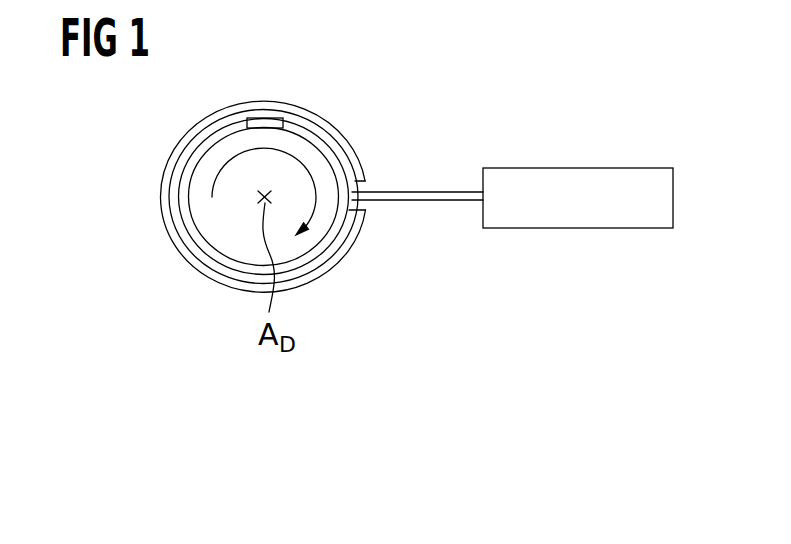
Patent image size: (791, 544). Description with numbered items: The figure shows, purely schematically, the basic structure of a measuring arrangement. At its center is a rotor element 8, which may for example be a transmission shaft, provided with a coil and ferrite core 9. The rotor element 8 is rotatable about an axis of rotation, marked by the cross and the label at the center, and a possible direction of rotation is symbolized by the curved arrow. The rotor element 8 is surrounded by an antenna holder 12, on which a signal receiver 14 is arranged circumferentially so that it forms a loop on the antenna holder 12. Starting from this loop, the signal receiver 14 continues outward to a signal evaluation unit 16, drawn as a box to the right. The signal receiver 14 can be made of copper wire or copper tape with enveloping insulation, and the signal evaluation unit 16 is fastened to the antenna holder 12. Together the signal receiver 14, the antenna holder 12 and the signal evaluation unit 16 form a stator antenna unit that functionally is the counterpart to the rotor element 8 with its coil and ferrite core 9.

The rotor element 8 is at (220, 226).
The coil and ferrite core 9 is at (263, 127).
The antenna holder 12 is at (213, 110).
The signal receiver 14 is at (333, 136).
The signal evaluation unit 16 is at (593, 168).